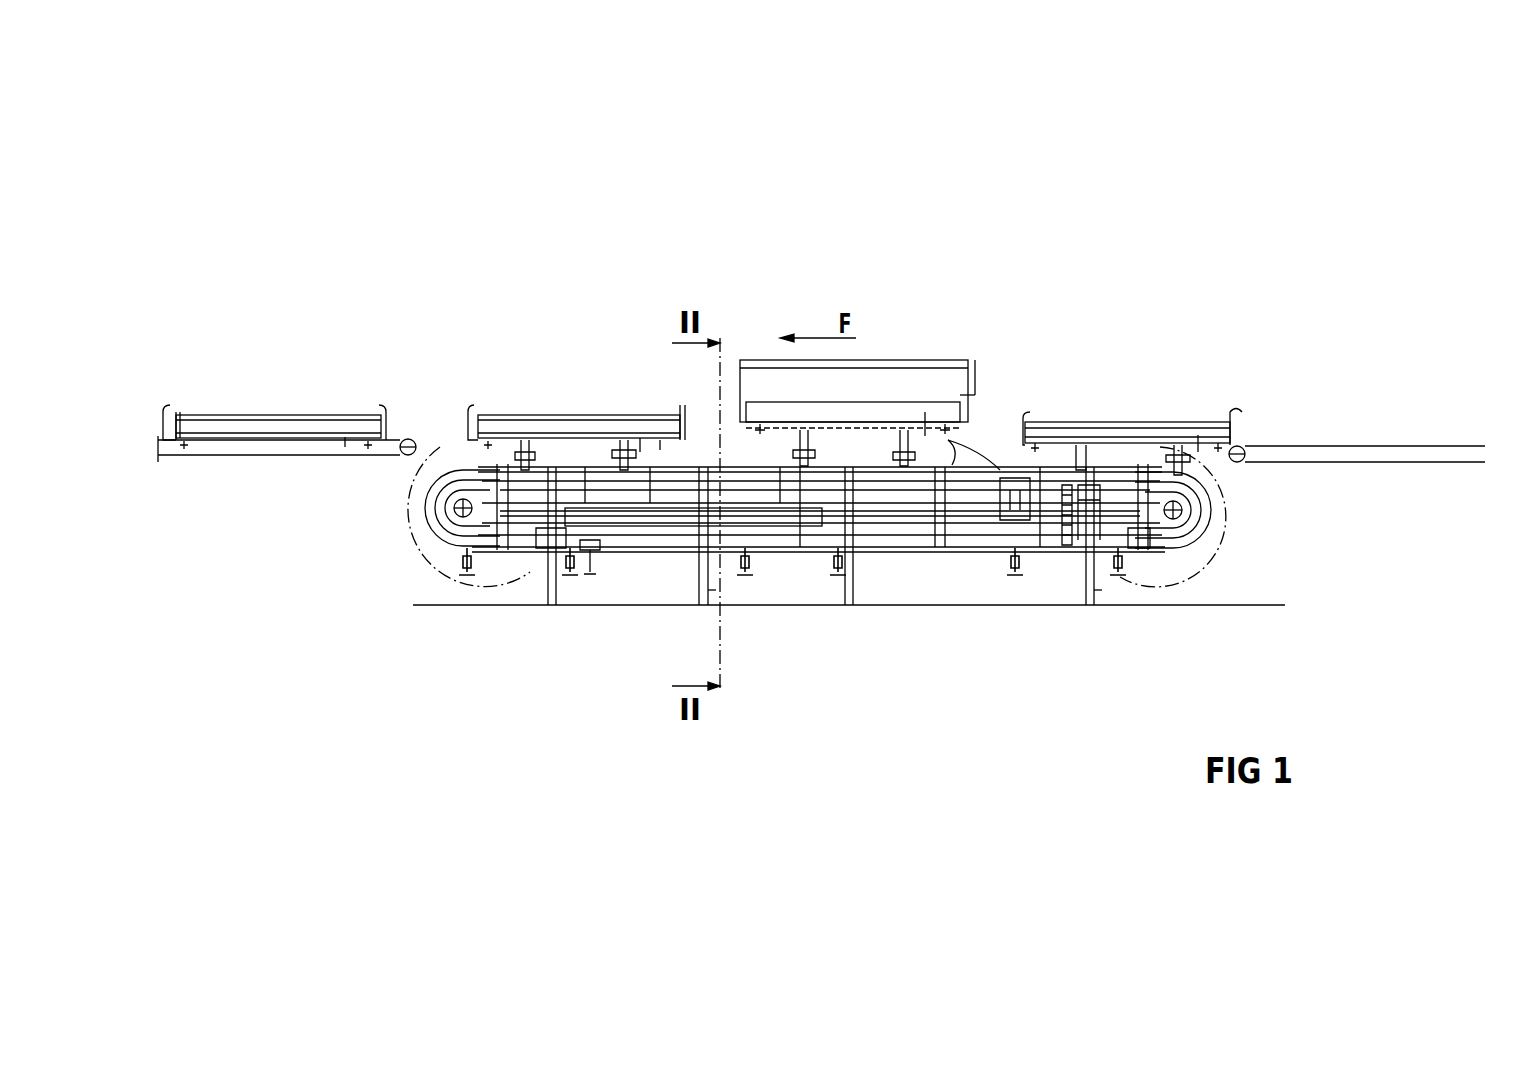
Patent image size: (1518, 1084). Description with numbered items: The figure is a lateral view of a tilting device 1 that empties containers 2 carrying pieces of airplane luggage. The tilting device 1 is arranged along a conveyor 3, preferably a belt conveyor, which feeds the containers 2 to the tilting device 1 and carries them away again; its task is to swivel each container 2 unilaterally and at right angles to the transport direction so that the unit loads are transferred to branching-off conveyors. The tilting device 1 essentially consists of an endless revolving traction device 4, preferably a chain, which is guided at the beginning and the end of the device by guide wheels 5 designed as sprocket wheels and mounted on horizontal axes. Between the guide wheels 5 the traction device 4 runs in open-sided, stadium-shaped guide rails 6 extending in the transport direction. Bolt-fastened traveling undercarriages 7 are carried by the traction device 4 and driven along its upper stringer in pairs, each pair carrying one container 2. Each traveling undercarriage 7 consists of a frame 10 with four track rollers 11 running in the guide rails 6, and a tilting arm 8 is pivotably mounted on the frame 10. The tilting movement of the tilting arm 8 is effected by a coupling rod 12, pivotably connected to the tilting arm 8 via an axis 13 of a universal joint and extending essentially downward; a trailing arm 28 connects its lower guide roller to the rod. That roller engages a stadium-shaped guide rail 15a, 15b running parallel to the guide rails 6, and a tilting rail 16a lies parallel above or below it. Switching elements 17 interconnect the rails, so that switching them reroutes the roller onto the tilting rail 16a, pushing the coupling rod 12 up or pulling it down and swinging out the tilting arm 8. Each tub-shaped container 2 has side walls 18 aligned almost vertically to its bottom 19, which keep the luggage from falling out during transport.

The tilting device 1 is at (537, 294).
The container 2 is at (1062, 430).
The conveyor 3 is at (238, 450).
The traction device 4 is at (1140, 475).
The guide wheel 5 is at (430, 535).
The guide rail 6 is at (1000, 480).
The traveling undercarriage 7 is at (612, 465).
The tilting arm 8 is at (525, 455).
The frame 10 is at (587, 550).
The track roller 11 is at (547, 545).
The coupling rod 12 is at (1076, 522).
The axis of a universal joint 13 is at (1085, 525).
The guide rail 15a is at (727, 490).
The guide rail 15b is at (627, 528).
The tilting rail 16a is at (752, 490).
The switching element 17 is at (965, 480).
The side wall 18 is at (176, 440).
The bottom 19 is at (260, 440).
The trailing arm 28 is at (1137, 550).